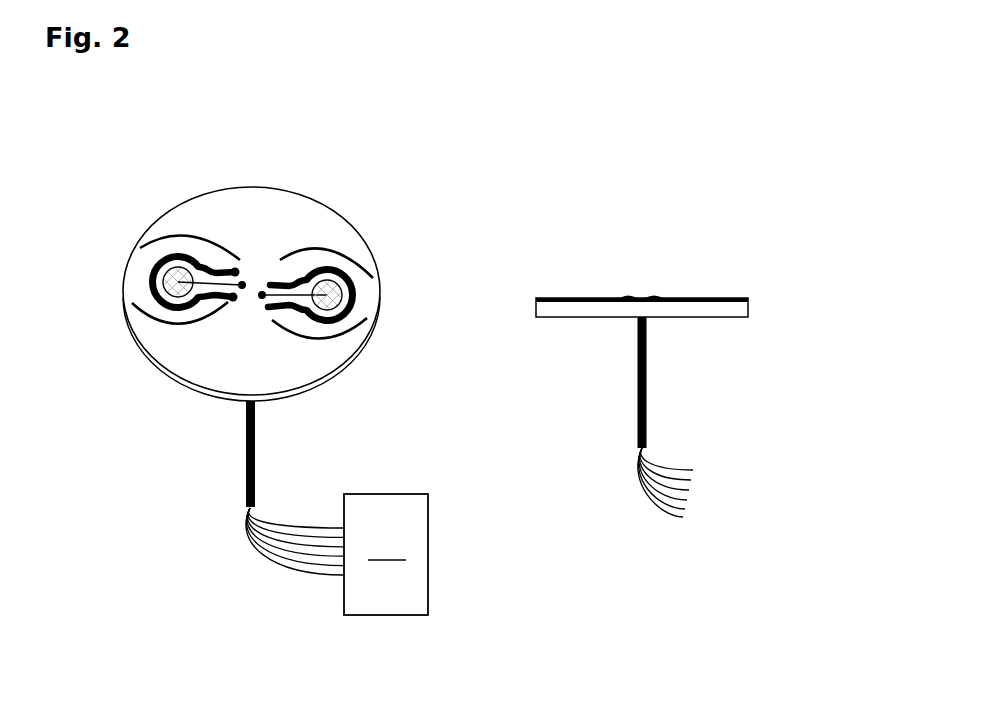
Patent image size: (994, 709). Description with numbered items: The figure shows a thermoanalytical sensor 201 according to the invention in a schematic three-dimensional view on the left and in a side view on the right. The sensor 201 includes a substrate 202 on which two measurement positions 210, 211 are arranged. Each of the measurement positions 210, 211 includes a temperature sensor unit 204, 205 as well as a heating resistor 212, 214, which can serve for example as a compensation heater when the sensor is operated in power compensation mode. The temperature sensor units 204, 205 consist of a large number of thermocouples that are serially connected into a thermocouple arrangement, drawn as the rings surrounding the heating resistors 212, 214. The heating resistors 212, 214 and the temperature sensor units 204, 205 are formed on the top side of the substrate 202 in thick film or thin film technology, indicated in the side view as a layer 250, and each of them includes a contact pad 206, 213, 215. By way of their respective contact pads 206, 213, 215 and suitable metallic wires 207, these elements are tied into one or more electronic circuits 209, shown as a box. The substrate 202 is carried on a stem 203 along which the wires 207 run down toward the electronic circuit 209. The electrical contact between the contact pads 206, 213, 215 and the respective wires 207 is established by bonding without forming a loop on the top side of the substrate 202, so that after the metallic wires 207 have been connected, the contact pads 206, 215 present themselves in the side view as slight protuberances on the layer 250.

The sensor 201 is at (133, 383).
The substrate 202 is at (193, 212).
The shaft 203 is at (245, 452).
The temperature sensor unit 204 is at (356, 298).
The temperature sensor unit 205 is at (156, 280).
The contact pad 206 is at (232, 300).
The metallic wires 207 is at (233, 556).
The electronic circuit 209 is at (386, 554).
The measurement position 210 is at (364, 283).
The measurement position 211 is at (138, 261).
The heating resistor 212 is at (176, 283).
The contact pad 213 is at (236, 268).
The heating resistor 214 is at (330, 298).
The contact pad 215 is at (244, 283).
The layer 250 is at (749, 300).